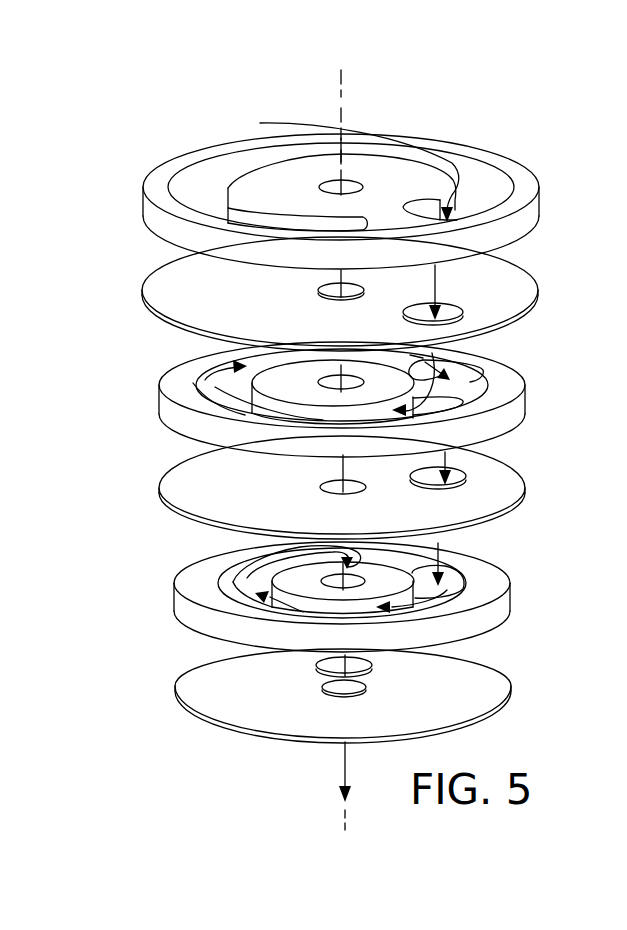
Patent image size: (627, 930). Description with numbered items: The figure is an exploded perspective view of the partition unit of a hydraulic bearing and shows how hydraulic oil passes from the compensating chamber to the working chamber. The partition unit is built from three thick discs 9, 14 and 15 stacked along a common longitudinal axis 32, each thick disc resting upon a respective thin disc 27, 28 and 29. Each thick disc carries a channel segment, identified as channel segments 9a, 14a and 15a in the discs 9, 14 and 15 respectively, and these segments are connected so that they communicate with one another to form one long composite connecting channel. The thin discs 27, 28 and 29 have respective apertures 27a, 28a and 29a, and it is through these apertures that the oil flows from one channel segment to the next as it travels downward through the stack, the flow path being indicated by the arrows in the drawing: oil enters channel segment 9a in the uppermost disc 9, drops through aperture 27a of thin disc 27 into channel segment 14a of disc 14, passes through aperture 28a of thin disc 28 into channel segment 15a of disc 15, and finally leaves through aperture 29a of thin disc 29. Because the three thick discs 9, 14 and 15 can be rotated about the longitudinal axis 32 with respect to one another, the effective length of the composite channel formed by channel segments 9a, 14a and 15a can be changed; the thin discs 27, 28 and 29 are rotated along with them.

The longitudinal axis 32 is at (343, 95).
The disc 9 is at (542, 203).
The channel segment 9a is at (493, 175).
The thin disc 27 is at (537, 300).
The aperture 27a is at (463, 305).
The disc 14 is at (525, 393).
The channel segment 14a is at (208, 382).
The thin disc 28 is at (525, 487).
The aperture 28a is at (462, 473).
The disc 15 is at (512, 597).
The channel segment 15a is at (237, 578).
The thin disc 29 is at (512, 695).
The aperture 29a is at (372, 666).